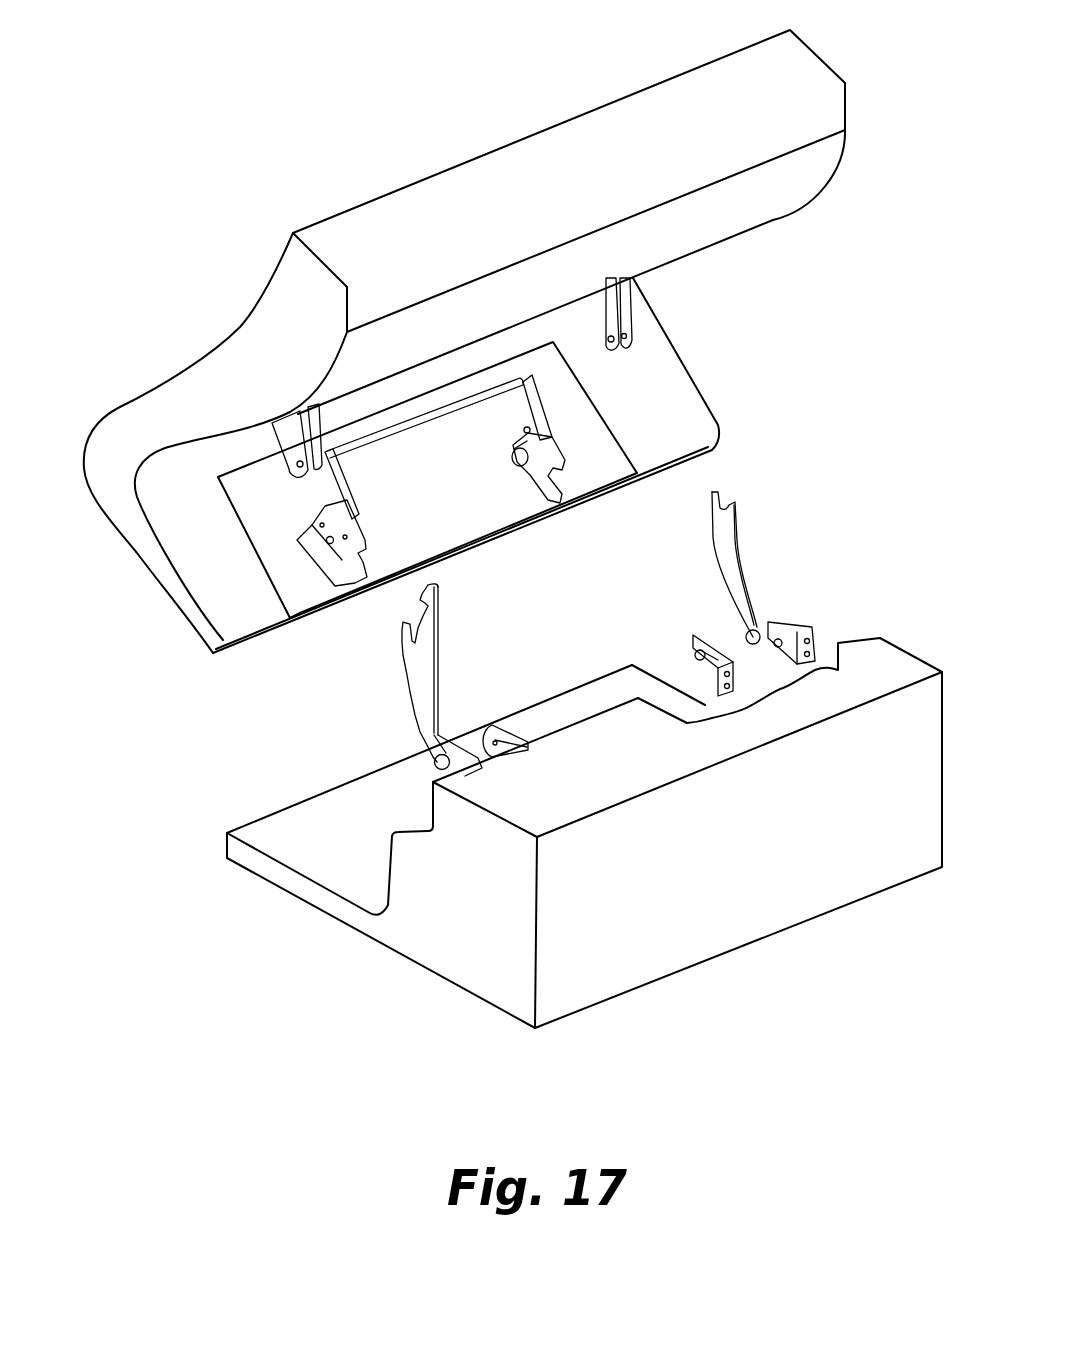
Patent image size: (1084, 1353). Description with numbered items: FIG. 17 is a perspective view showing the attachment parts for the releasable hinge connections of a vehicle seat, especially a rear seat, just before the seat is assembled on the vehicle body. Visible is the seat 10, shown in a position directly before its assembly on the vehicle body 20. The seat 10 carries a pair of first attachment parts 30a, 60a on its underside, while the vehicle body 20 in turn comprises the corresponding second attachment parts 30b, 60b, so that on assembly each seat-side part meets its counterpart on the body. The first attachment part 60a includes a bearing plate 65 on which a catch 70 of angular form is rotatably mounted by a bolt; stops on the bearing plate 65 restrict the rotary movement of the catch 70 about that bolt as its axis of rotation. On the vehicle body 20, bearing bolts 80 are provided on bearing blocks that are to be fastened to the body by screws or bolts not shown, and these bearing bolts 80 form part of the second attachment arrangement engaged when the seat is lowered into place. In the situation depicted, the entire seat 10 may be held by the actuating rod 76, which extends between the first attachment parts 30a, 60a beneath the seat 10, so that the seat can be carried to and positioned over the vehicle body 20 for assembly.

The seat 10 is at (600, 189).
The vehicle body 20 is at (772, 859).
The first attachment part 30a is at (641, 321).
The second attachment part 30b is at (454, 606).
The first attachment part 60a is at (566, 444).
The second attachment part 60b is at (517, 729).
The bearing plate 65 is at (353, 537).
The catch 70 is at (533, 472).
The actuating rod 76 is at (462, 406).
The bearing bolt 80 is at (700, 662).